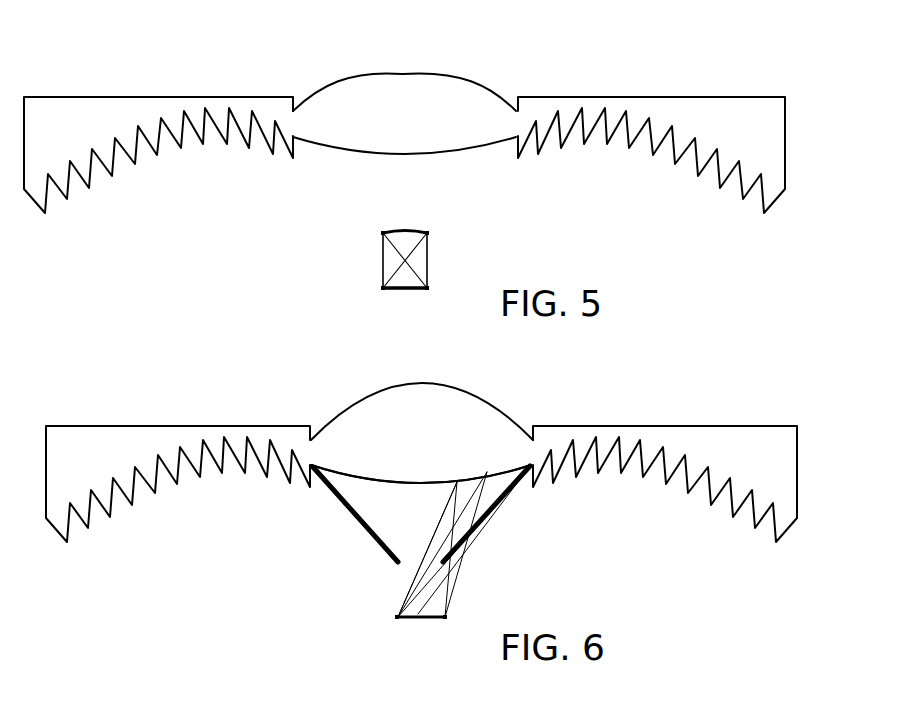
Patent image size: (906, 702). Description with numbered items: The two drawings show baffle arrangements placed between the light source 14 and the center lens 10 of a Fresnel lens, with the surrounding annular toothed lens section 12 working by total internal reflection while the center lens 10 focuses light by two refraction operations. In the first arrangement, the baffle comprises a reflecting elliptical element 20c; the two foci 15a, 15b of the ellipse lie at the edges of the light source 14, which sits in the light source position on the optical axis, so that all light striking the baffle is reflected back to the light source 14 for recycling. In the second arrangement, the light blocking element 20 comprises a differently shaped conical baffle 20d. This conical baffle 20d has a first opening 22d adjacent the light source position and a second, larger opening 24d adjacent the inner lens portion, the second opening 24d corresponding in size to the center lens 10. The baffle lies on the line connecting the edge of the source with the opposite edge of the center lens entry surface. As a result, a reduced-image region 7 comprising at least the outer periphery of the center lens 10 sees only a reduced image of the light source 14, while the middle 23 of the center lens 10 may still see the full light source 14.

In FIG. 6, the reduced-image region 7 is at (480, 477).
In FIG. 5, the center lens 10 is at (338, 82).
In FIG. 6, the center lens 10 is at (360, 407).
In FIG. 5, the frame arm with teeth 12 is at (177, 90).
In FIG. 6, the frame arm with teeth 12 is at (177, 420).
In FIG. 5, the light source 14 is at (410, 290).
In FIG. 6, the light source 14 is at (412, 620).
In FIG. 5, the focus of the ellipse 15a is at (384, 286).
In FIG. 5, the focus of the ellipse 15b is at (428, 290).
In FIG. 6, the light blocking element 20 is at (487, 512).
In FIG. 5, the reflecting elliptical element 20c is at (397, 231).
In FIG. 6, the conical baffle 20d is at (348, 548).
In FIG. 6, the first opening 22d is at (406, 574).
In FIG. 6, the middle of the center lens 23 is at (418, 483).
In FIG. 6, the second opening 24d is at (410, 464).